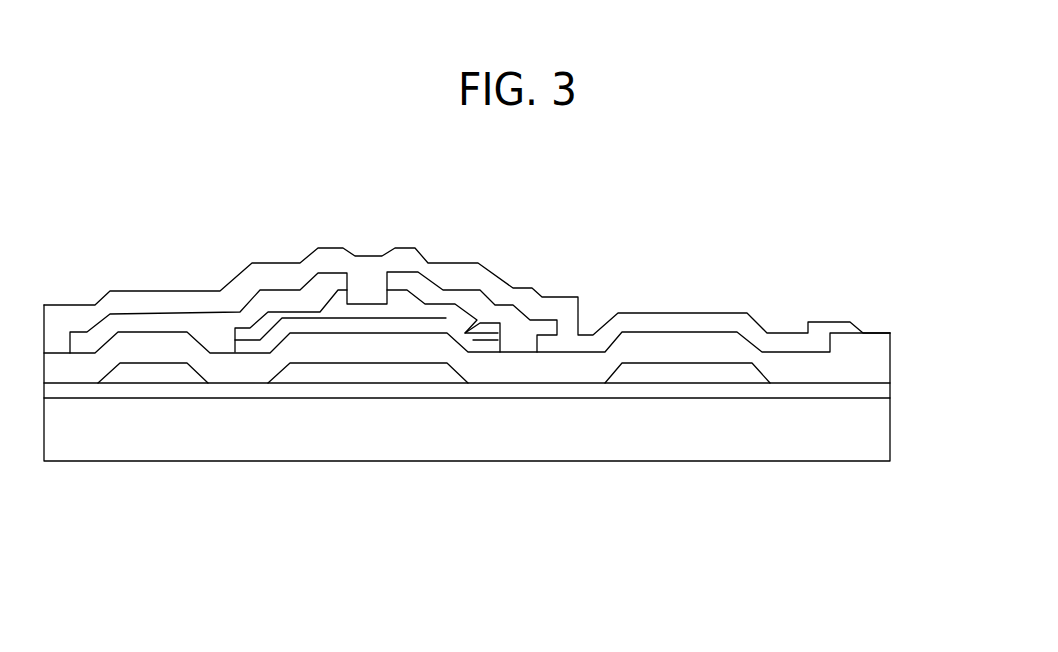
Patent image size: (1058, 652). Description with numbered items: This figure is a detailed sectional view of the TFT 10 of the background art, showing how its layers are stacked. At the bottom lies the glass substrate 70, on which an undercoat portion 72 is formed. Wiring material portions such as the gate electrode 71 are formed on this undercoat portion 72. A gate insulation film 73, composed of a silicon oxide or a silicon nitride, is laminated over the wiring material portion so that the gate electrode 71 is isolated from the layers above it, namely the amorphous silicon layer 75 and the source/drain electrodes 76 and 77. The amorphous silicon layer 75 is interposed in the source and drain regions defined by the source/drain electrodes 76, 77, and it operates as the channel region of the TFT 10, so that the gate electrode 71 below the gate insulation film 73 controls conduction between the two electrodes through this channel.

The TFT 10 is at (660, 268).
The glass substrate 70 is at (187, 450).
The gate electrode 71 is at (382, 394).
The undercoat portion 72 is at (707, 393).
The gate insulation film 73 is at (236, 389).
The amorphous silicon layer 75 is at (450, 312).
The source/drain electrode 76 is at (227, 302).
The source/drain electrode 77 is at (518, 306).